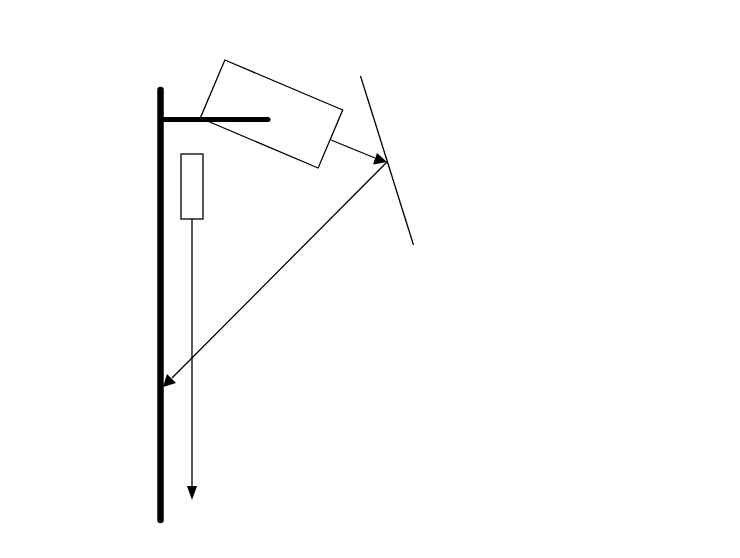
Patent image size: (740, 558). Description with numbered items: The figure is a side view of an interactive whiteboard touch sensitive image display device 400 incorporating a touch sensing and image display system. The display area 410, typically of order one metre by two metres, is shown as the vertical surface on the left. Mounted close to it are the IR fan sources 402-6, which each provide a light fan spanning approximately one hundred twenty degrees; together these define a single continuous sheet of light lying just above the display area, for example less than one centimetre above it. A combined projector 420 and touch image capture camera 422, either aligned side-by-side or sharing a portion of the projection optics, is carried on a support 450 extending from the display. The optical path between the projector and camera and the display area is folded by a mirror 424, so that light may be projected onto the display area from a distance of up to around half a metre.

The interactive whiteboard touch sensitive image display device 400 is at (408, 471).
The display area 410 is at (158, 345).
The support 450 is at (187, 118).
The projector 420 is at (283, 84).
The touch image capture camera 422 is at (271, 97).
The mirror 424 is at (380, 132).
The IR fan sources 402-6 is at (181, 187).